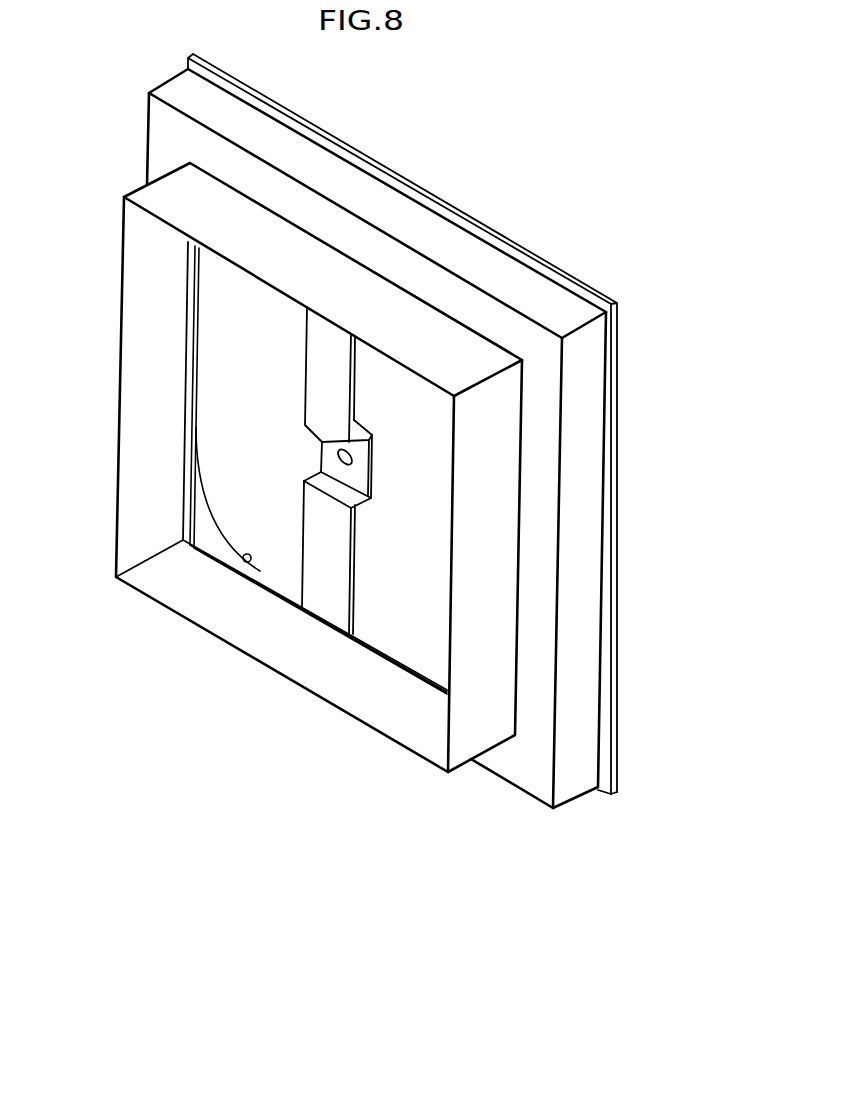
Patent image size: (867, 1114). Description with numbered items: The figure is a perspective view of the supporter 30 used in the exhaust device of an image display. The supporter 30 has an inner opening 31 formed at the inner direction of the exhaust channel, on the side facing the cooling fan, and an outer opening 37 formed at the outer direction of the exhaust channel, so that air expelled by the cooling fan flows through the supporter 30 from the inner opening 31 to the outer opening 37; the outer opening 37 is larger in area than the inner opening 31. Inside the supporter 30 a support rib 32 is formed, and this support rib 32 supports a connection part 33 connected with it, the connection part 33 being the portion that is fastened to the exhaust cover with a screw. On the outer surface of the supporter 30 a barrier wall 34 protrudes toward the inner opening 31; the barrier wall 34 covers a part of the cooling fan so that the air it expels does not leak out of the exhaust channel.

The supporter 30 is at (572, 802).
The inner opening 31 is at (245, 561).
The support rib 32 is at (323, 580).
The connection part 33 is at (357, 475).
The barrier wall 34 is at (493, 630).
The outer opening 37 is at (272, 352).